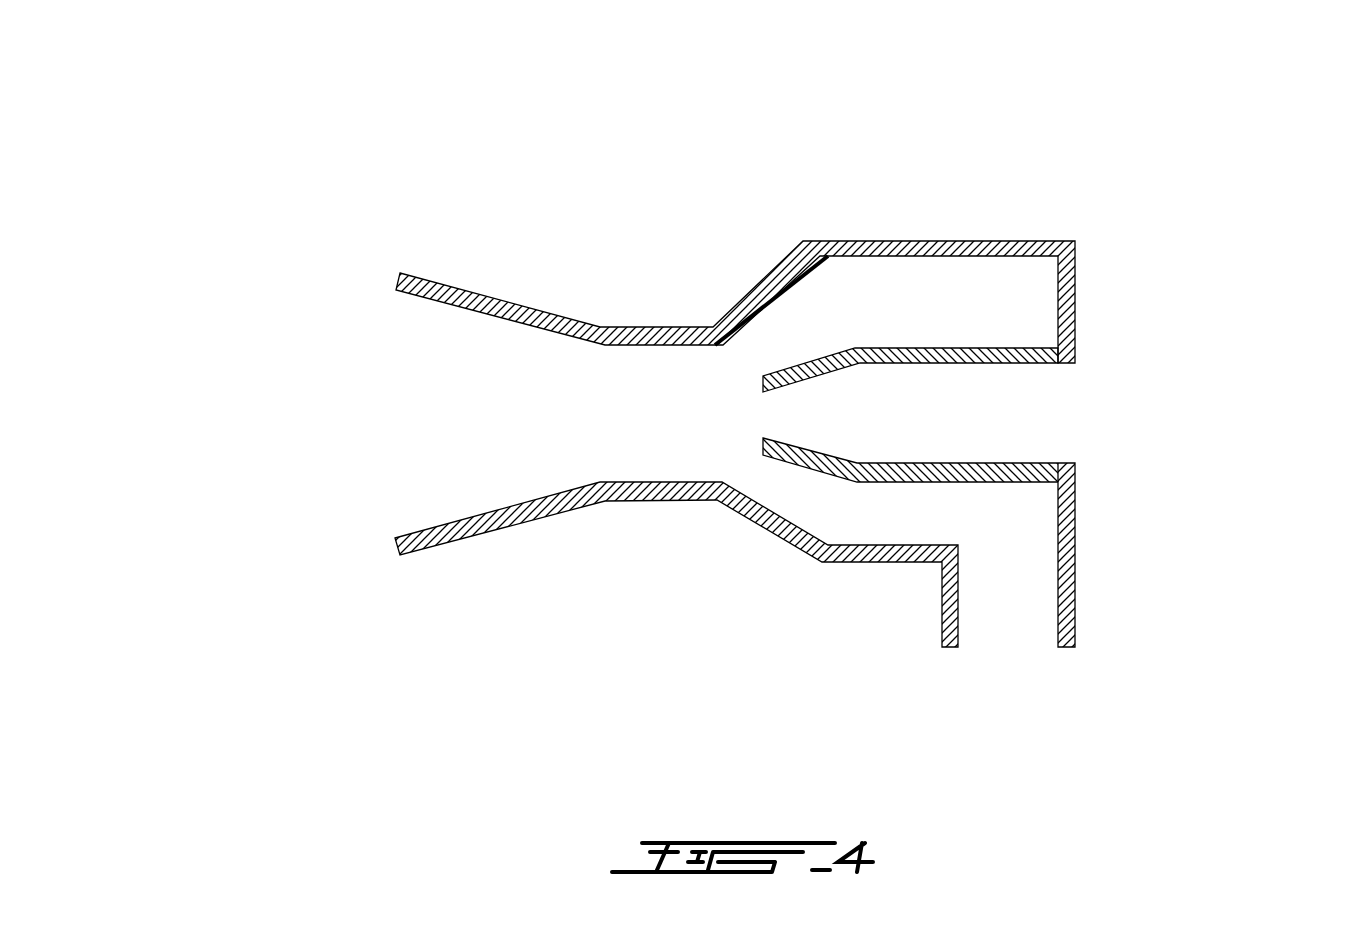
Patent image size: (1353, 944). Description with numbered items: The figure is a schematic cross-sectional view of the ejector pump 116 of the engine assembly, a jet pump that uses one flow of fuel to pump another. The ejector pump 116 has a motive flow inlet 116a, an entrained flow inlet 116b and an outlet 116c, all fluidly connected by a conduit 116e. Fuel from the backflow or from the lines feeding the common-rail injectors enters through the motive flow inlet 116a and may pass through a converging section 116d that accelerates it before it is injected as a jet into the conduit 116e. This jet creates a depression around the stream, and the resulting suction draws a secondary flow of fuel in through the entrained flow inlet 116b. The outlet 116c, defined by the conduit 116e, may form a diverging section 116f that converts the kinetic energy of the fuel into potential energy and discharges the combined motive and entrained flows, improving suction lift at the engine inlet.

The ejector pump 116 is at (1157, 200).
The motive flow inlet 116a is at (1030, 404).
The entrained flow inlet 116b is at (1015, 612).
The outlet 116c is at (455, 385).
The converging section 116d is at (810, 358).
The conduit 116e is at (650, 327).
The diverging section 116f is at (486, 528).